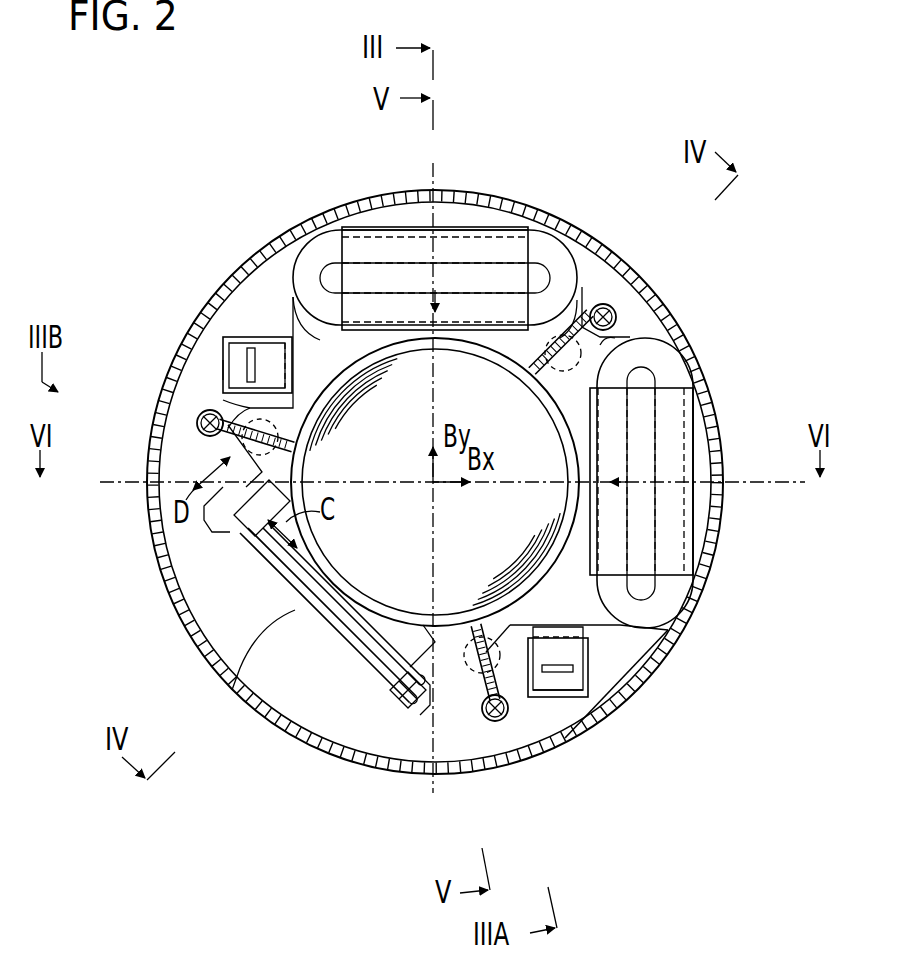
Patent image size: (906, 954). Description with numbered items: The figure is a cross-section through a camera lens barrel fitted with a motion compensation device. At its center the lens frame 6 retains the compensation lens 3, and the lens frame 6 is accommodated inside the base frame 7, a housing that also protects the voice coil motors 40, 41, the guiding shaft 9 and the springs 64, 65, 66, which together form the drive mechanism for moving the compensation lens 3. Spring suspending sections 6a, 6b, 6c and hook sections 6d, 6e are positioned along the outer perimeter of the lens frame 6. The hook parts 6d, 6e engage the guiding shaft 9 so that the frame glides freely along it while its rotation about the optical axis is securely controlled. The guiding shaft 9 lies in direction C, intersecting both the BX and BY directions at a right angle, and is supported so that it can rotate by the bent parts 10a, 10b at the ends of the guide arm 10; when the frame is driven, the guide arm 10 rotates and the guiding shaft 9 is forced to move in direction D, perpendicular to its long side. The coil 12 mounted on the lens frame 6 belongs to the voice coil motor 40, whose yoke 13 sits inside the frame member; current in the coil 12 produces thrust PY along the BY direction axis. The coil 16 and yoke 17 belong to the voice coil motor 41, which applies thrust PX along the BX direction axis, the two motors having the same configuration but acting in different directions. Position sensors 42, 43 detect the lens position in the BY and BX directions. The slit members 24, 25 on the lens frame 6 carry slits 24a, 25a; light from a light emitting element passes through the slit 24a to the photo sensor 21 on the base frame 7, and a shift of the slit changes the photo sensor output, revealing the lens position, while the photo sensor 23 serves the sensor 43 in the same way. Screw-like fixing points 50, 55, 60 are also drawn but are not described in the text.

The compensation lens 3 is at (416, 372).
The lens frame 6 is at (291, 352).
The spring suspending section 6a is at (585, 280).
The spring suspending section 6b is at (222, 400).
The spring suspending section 6c is at (530, 702).
The hook section 6d is at (165, 598).
The hook section 6e is at (395, 712).
The base frame 7 is at (580, 328).
The guiding shaft 9 is at (302, 728).
The guide arm 10 is at (237, 670).
The bent part 10a is at (160, 562).
The bent part 10b is at (412, 725).
The coil 12 is at (548, 253).
The yoke 13 is at (475, 247).
The coil 16 is at (675, 345).
The yoke 17 is at (675, 409).
The photo sensor 21 is at (592, 677).
The photo sensor 23 is at (253, 343).
The slit member 24 is at (596, 663).
The slit 24a is at (568, 697).
The slit member 25 is at (256, 335).
The slit 25a is at (248, 347).
The voice coil motor 40 is at (419, 222).
The voice coil motor 41 is at (699, 503).
The position sensor 42 is at (565, 651).
The position sensor 43 is at (217, 362).
The magnet back yoke 50 is at (663, 357).
The pin 55 is at (200, 468).
The pin 60 is at (483, 680).
The spring 64 is at (615, 308).
The spring 65 is at (198, 430).
The spring 66 is at (505, 722).